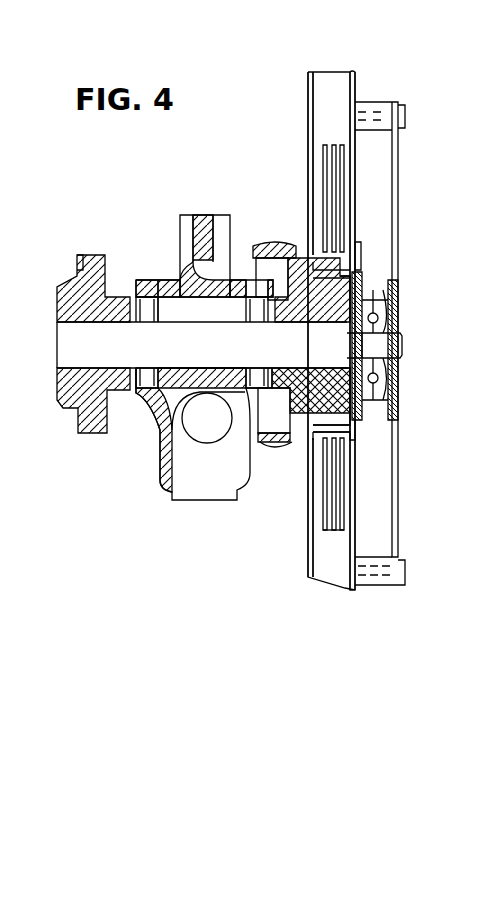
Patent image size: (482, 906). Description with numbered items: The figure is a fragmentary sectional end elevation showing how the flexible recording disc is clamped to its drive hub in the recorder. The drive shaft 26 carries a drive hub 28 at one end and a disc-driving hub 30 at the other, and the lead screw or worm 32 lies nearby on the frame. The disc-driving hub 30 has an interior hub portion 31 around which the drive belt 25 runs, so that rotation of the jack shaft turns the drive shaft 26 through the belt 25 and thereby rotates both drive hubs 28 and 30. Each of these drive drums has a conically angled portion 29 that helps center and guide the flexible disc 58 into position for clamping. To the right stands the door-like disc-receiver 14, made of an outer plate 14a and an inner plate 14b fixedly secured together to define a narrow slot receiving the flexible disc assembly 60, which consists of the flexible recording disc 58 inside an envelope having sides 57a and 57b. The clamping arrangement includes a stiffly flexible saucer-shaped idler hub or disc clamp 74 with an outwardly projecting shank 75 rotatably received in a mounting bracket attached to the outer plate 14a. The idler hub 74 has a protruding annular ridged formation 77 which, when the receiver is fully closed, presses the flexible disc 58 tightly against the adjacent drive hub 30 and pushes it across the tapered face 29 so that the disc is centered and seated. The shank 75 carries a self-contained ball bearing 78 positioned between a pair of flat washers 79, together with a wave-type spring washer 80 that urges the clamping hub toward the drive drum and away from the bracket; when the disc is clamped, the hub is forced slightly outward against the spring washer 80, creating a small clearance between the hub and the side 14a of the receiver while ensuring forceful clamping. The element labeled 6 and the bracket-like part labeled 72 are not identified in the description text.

The housing 6 is at (395, 190).
The disc-receiver 14 is at (360, 70).
The outer plate of disc-receiver 14a is at (357, 95).
The inner plate of disc-receiver 14b is at (310, 158).
The drive belt 25 is at (268, 445).
The drive shaft 26 is at (184, 348).
The drive hub 28 is at (97, 257).
The conically angled portion 29 is at (60, 400).
The disc-driving hub 30 is at (284, 246).
The interior hub portion 31 is at (285, 443).
The lead screw or worm 32 is at (218, 427).
The envelope side 57a is at (345, 505).
The envelope side 57b is at (323, 500).
The flexible recording disc 58 is at (330, 148).
The flexible disc assembly 60 is at (332, 536).
The bracket 72 is at (346, 432).
The idler hub or disc clamp 74 is at (366, 253).
The shank 75 is at (404, 338).
The annular ridged formation 77 is at (296, 385).
The ball bearing 78 is at (386, 303).
The flat washers 79 is at (388, 396).
The wave-type spring washer 80 is at (400, 377).